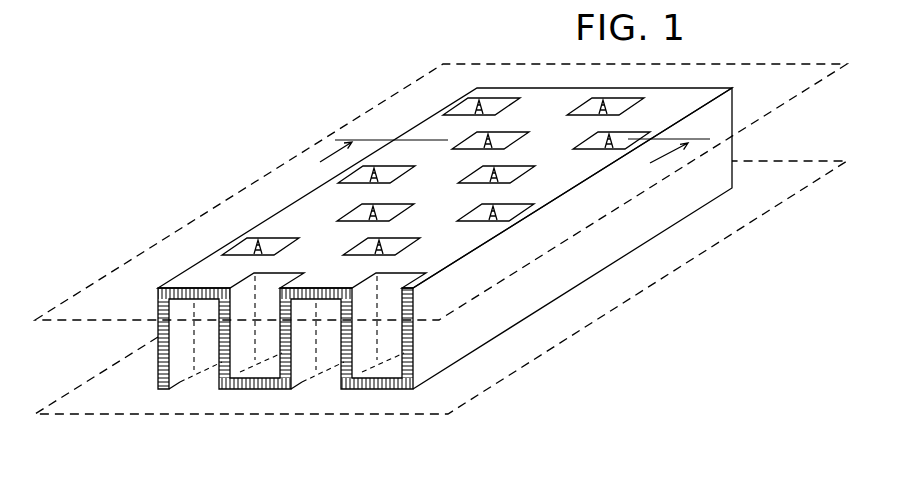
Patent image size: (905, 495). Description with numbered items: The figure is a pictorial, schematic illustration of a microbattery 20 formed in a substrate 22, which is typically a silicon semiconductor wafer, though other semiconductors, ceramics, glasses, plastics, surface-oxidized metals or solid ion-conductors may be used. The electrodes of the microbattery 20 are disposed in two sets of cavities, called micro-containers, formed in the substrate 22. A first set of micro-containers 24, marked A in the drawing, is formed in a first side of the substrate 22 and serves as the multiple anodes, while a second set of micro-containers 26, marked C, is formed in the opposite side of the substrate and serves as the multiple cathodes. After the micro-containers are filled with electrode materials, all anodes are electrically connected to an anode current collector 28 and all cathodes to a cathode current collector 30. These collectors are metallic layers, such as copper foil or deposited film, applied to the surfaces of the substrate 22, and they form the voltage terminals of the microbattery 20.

The microbattery 20 is at (445, 261).
The substrate 22 is at (587, 253).
The first set of micro-containers 24 is at (580, 102).
The second set of micro-containers 26 is at (206, 380).
The anode current collector 28 is at (155, 238).
The cathode current collector 30 is at (114, 408).